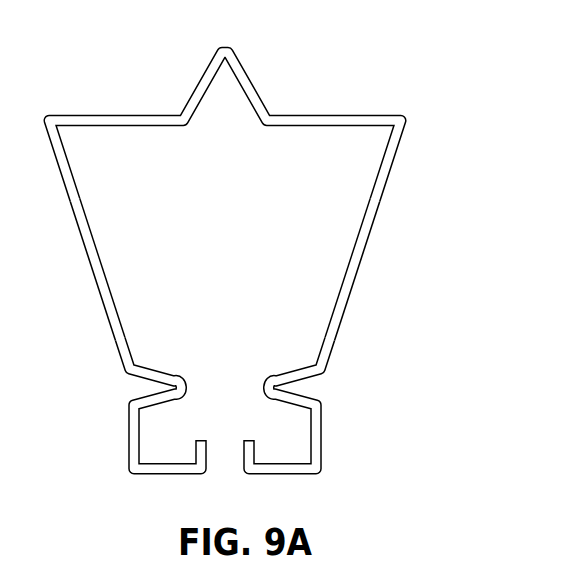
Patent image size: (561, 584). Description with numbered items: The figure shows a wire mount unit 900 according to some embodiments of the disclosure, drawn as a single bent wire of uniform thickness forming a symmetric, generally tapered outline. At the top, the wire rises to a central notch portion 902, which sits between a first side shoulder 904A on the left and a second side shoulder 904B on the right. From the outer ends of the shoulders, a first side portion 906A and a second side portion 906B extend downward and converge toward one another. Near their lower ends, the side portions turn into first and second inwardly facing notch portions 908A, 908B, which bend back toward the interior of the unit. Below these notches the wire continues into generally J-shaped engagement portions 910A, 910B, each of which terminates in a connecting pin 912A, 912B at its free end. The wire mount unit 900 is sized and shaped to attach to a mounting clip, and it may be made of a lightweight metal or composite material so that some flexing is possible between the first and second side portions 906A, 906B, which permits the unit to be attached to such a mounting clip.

The wire mount unit 900 is at (254, 270).
The central notch portion 902 is at (262, 67).
The first side shoulder 904A is at (116, 103).
The second side shoulder 904B is at (333, 102).
The first side portion 906A is at (96, 284).
The second side portion 906B is at (355, 284).
The first inwardly facing notch portion 908A is at (190, 366).
The second inwardly facing notch portion 908B is at (264, 348).
The first J-shaped engagement portion 910A is at (134, 489).
The second J-shaped engagement portion 910B is at (311, 490).
The first connecting pin 912A is at (202, 430).
The second connecting pin 912B is at (254, 420).